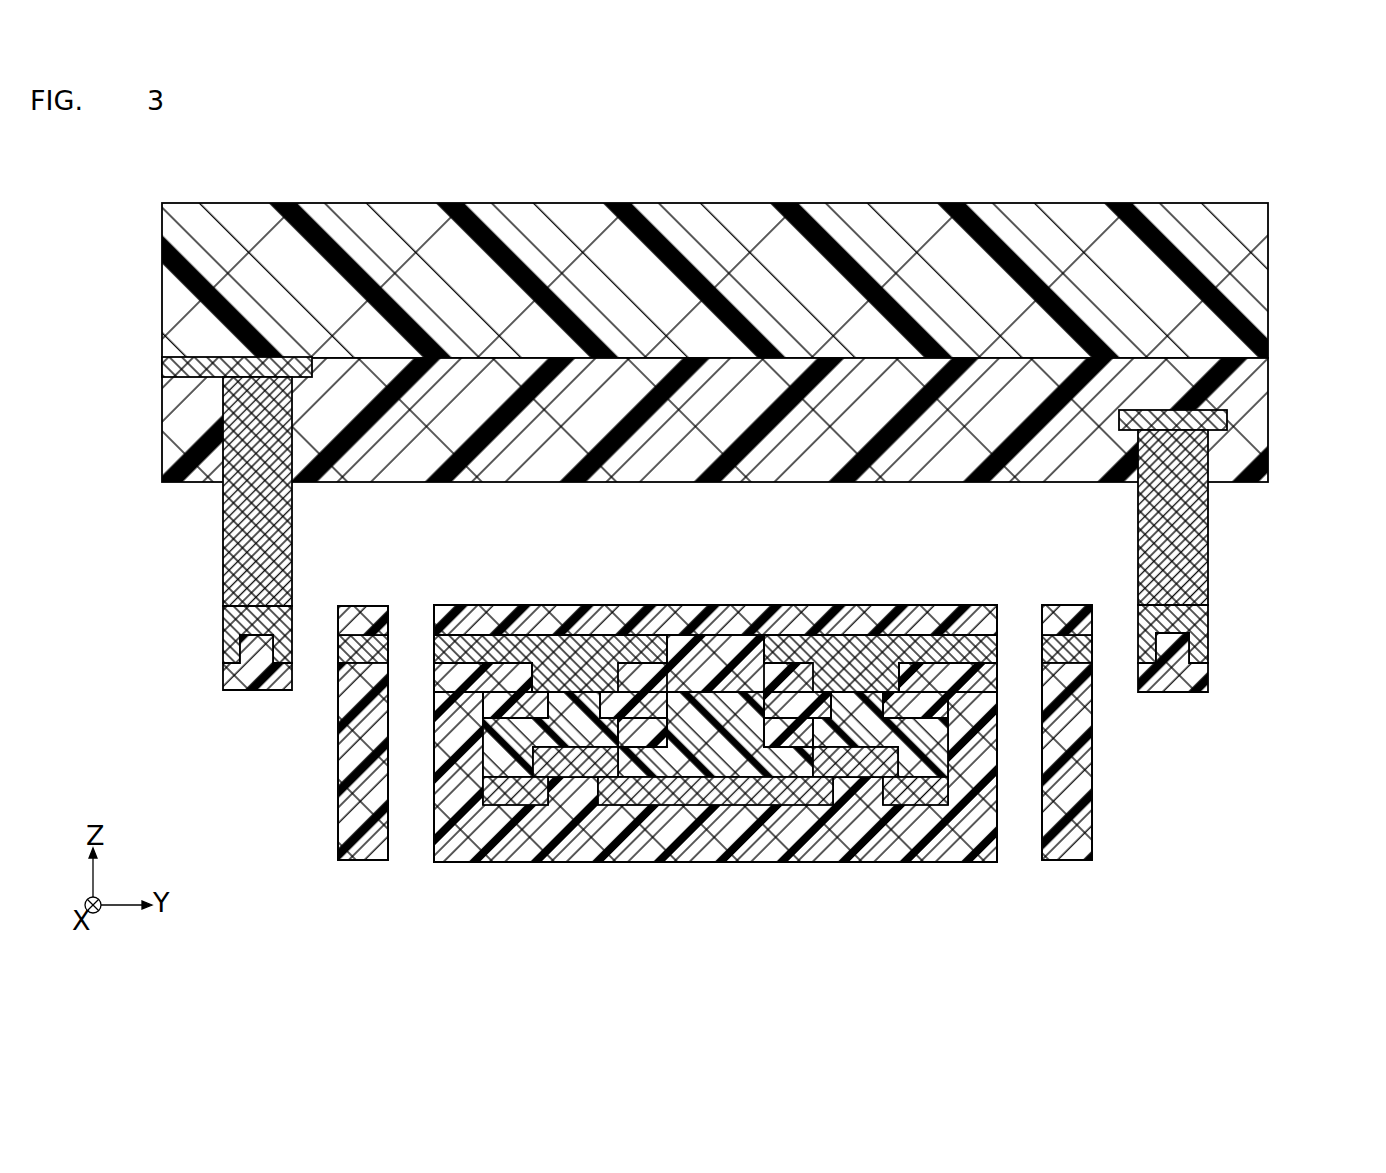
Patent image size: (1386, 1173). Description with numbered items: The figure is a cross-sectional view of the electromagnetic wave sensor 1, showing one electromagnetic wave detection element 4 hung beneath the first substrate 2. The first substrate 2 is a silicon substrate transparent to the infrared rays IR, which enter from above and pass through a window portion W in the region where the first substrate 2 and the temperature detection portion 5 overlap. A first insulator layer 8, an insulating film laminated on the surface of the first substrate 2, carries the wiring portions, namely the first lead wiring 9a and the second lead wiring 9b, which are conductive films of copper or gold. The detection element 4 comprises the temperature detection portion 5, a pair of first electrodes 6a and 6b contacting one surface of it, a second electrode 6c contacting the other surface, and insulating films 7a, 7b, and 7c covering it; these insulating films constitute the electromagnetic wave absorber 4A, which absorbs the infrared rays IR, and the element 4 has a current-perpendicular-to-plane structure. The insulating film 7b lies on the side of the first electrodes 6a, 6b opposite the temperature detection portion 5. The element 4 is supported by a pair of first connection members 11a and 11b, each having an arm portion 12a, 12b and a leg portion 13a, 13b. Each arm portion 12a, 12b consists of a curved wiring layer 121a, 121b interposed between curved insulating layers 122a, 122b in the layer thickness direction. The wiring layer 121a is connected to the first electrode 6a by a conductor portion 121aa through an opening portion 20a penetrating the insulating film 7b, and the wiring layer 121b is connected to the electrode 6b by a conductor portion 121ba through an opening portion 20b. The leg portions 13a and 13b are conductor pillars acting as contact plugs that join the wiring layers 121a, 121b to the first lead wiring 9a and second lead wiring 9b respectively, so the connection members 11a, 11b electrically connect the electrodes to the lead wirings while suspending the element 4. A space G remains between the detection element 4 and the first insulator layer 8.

The electromagnetic wave sensor 1 is at (1186, 132).
The first substrate 2 is at (1235, 283).
The first insulator layer 8 is at (1222, 385).
The first lead wiring 9a is at (1213, 420).
The second lead wiring 9b is at (181, 368).
The leg portion 13a is at (1183, 532).
The leg portion 13b is at (236, 544).
The wiring layer 121a is at (1182, 620).
The wiring layer 121b is at (243, 622).
The insulating layer 122a is at (1073, 620).
The insulating layer 122b is at (357, 620).
The arm portion 12a is at (1218, 783).
The arm portion 12b is at (203, 783).
The first connection member 11a is at (1230, 718).
The first connection member 11b is at (195, 715).
The electromagnetic wave detection element 4 is at (710, 898).
The electromagnetic wave absorber 4A is at (752, 888).
The temperature detection portion 5 is at (715, 745).
The first electrode 6a is at (887, 668).
The first electrode 6b is at (540, 672).
The second electrode 6c is at (857, 760).
The insulating film 7a is at (967, 622).
The insulating film 7b is at (247, 678).
The insulating film 7c is at (575, 808).
The opening portion 20a is at (917, 672).
The opening portion 20b is at (500, 670).
The conductor portion 121aa is at (860, 675).
The conductor portion 121ba is at (572, 677).
The space G is at (1041, 517).
The window portion W is at (620, 395).
The infrared rays IR is at (715, 555).